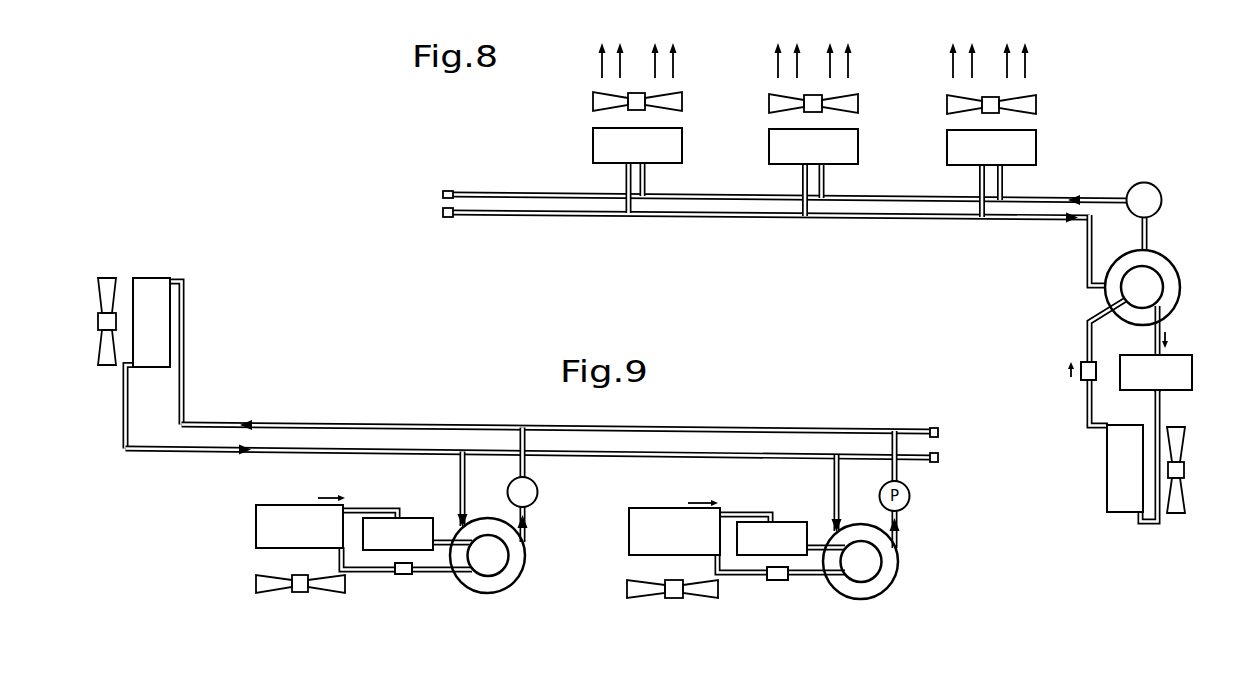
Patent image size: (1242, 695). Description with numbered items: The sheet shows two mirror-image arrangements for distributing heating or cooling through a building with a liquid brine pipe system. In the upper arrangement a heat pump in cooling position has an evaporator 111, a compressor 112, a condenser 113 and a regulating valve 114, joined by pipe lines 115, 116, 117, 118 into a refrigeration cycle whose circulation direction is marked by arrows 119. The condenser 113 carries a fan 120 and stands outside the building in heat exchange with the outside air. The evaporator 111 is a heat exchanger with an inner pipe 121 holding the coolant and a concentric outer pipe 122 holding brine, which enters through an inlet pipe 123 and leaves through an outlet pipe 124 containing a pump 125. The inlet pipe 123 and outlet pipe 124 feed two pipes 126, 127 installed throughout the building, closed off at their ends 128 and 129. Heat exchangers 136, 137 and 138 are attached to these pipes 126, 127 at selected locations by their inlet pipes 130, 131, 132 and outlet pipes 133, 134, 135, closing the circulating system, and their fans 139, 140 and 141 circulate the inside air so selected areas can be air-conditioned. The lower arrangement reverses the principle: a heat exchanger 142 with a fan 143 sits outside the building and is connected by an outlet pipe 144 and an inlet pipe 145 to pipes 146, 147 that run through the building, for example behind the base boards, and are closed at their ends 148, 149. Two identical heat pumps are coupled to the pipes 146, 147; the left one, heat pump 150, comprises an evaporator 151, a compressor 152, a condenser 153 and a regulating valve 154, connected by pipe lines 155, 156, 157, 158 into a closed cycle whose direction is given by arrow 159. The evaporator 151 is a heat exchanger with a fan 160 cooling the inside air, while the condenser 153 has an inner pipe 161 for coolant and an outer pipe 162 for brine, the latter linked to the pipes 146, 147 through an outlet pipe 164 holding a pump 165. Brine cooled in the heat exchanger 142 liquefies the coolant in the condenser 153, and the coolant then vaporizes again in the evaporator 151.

In FIG. 8, the evaporator 111 is at (1167, 269).
In FIG. 8, the compressor 112 is at (1172, 381).
In FIG. 8, the condenser 113 is at (1135, 469).
In FIG. 8, the regulating valve 114 is at (1083, 381).
In FIG. 8, the pipe line 115 is at (1153, 338).
In FIG. 8, the pipe line 116 is at (1161, 403).
In FIG. 8, the pipe line 117 is at (1085, 417).
In FIG. 8, the pipe line 118 is at (1085, 333).
In FIG. 8, the arrows 119 is at (1168, 337).
In FIG. 8, the fan 120 is at (1184, 438).
In FIG. 8, the inner pipe 121 is at (1122, 267).
In FIG. 8, the outer pipe 122 is at (1173, 256).
In FIG. 8, the inlet pipe 123 is at (1087, 255).
In FIG. 8, the outlet pipe 124 is at (1148, 228).
In FIG. 8, the pump 125 is at (1153, 184).
In FIG. 8, the pipe 126 is at (820, 220).
In FIG. 8, the pipe 127 is at (896, 203).
In FIG. 8, the end 128 is at (447, 217).
In FIG. 8, the end 129 is at (449, 190).
In FIG. 8, the inlet pipe 130 is at (644, 182).
In FIG. 8, the inlet pipe 131 is at (823, 185).
In FIG. 8, the inlet pipe 132 is at (1002, 185).
In FIG. 8, the outlet pipe 133 is at (627, 182).
In FIG. 8, the outlet pipe 134 is at (803, 185).
In FIG. 8, the outlet pipe 135 is at (981, 185).
In FIG. 8, the heat exchanger 136 is at (648, 153).
In FIG. 9, the heat exchanger 136 is at (458, 483).
In FIG. 8, the heat exchanger 137 is at (825, 155).
In FIG. 8, the heat exchanger 138 is at (1003, 157).
In FIG. 8, the fan 139 is at (593, 101).
In FIG. 8, the fan 140 is at (769, 103).
In FIG. 8, the fan 141 is at (947, 104).
In FIG. 9, the heat exchanger 142 is at (163, 329).
In FIG. 9, the fan 143 is at (105, 278).
In FIG. 9, the outlet pipe 144 is at (129, 397).
In FIG. 9, the inlet pipe 145 is at (186, 363).
In FIG. 9, the pipe 146 is at (397, 450).
In FIG. 9, the pipe 147 is at (343, 422).
In FIG. 9, the end 148 is at (936, 462).
In FIG. 9, the end 149 is at (932, 428).
In FIG. 9, the heat pump 150 is at (392, 536).
In FIG. 9, the evaporator 151 is at (313, 543).
In FIG. 9, the compressor 152 is at (413, 543).
In FIG. 9, the condenser 153 is at (513, 581).
In FIG. 9, the regulating valve 154 is at (402, 575).
In FIG. 9, the pipe line 155 is at (277, 507).
In FIG. 9, the pipe line 156 is at (443, 540).
In FIG. 9, the pipe line 157 is at (447, 575).
In FIG. 9, the pipe line 158 is at (363, 572).
In FIG. 9, the arrow 159 is at (337, 495).
In FIG. 9, the fan 160 is at (303, 593).
In FIG. 9, the inner pipe 161 is at (496, 576).
In FIG. 9, the outer pipe 162 is at (525, 563).
In FIG. 9, the outlet pipe 164 is at (527, 535).
In FIG. 9, the pump 165 is at (538, 486).